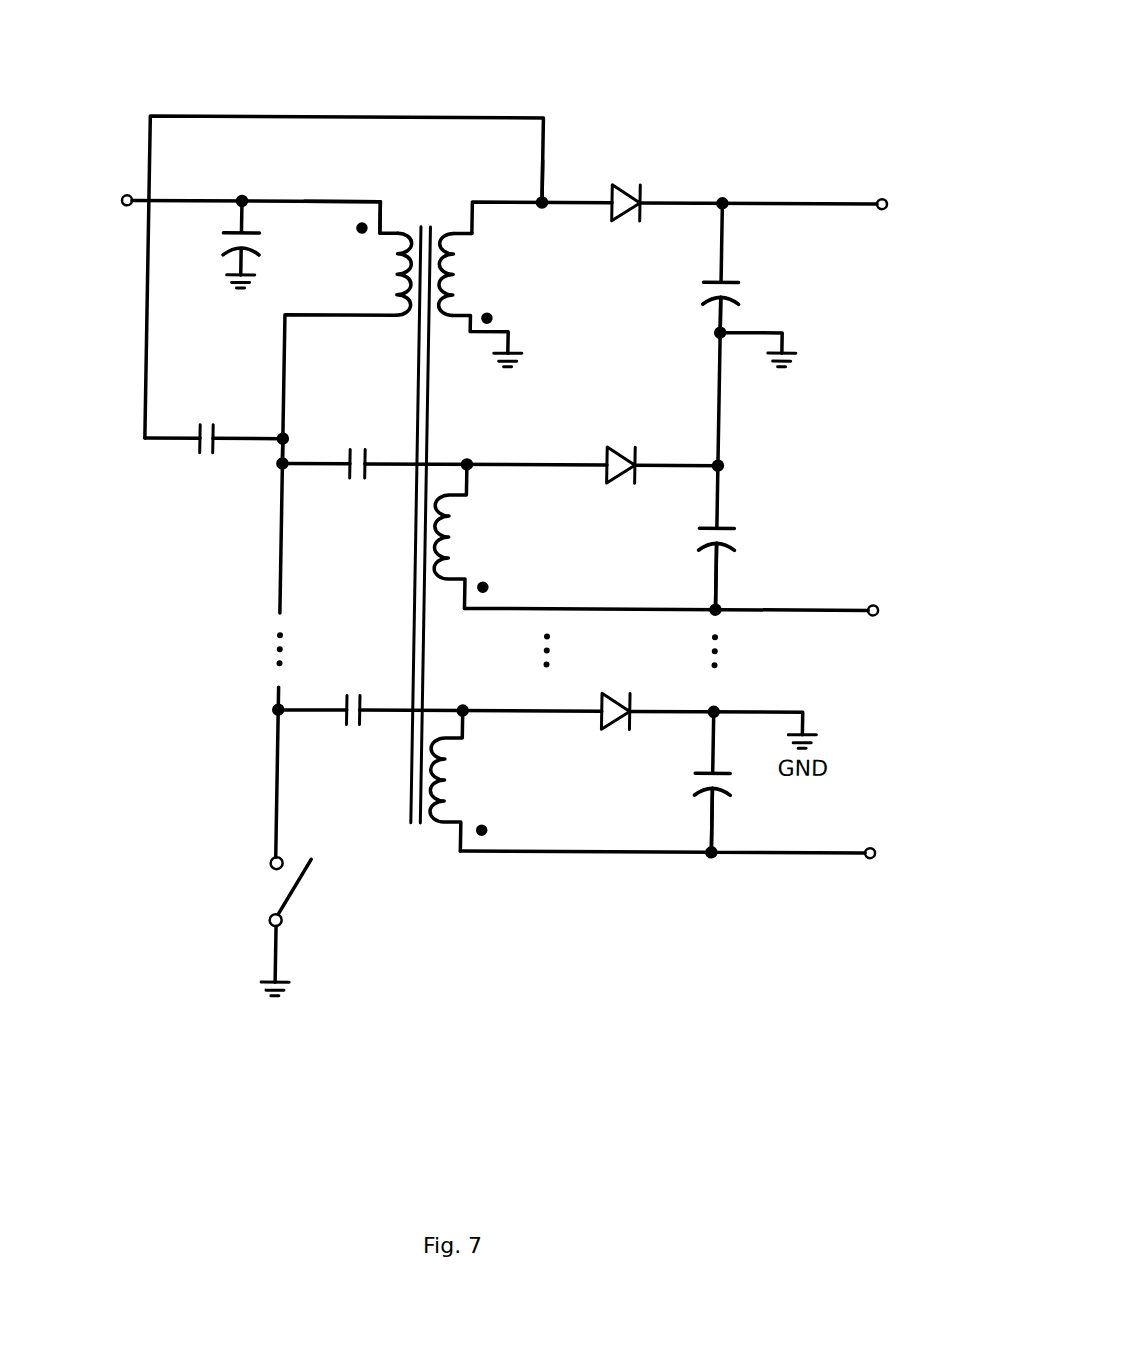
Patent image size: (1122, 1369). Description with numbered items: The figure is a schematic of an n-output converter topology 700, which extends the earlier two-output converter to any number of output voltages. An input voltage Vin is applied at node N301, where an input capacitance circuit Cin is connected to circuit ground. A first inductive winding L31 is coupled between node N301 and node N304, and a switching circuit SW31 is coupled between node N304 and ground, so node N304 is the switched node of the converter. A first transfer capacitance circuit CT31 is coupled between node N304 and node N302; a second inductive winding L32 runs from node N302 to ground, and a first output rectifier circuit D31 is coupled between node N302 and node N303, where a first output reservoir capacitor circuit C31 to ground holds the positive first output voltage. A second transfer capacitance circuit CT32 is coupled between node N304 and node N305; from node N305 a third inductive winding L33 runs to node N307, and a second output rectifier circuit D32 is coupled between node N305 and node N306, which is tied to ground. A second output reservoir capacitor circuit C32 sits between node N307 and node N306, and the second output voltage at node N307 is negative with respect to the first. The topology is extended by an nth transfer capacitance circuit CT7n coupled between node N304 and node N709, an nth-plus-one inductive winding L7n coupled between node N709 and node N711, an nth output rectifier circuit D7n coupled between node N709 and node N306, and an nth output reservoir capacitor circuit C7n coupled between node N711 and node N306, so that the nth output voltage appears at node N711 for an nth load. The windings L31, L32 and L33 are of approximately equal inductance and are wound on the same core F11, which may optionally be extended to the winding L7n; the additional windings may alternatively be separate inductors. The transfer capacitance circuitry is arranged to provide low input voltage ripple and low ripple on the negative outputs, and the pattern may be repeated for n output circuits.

The n-output converter topology 700 is at (717, 66).
The input voltage Vin is at (102, 200).
The input capacitance circuit Cin is at (219, 245).
The node N301 is at (338, 200).
The node N302 is at (536, 200).
The node N303 is at (716, 200).
The node N304 is at (282, 456).
The node N305 is at (467, 462).
The node N306 is at (720, 465).
The node N307 is at (722, 603).
The node N709 is at (472, 687).
The node N711 is at (725, 847).
The first inductive winding L31 is at (394, 286).
The second inductive winding L32 is at (452, 266).
The third inductive winding L33 is at (451, 531).
The (n+1)th inductive winding L7n is at (452, 775).
The core F11 is at (423, 830).
The first output rectifier circuit D31 is at (603, 185).
The second output rectifier circuit D32 is at (617, 447).
The nth output rectifier circuit D7n is at (610, 727).
The first output reservoir capacitor circuit C31 is at (697, 290).
The second output reservoir capacitor circuit C32 is at (739, 541).
The nth output reservoir capacitor circuit C7n is at (698, 784).
The first transfer capacitance circuit CT31 is at (206, 418).
The second transfer capacitance circuit CT32 is at (357, 444).
The nth transfer capacitance circuit CT7n is at (358, 683).
The switching circuit SW31 is at (280, 891).